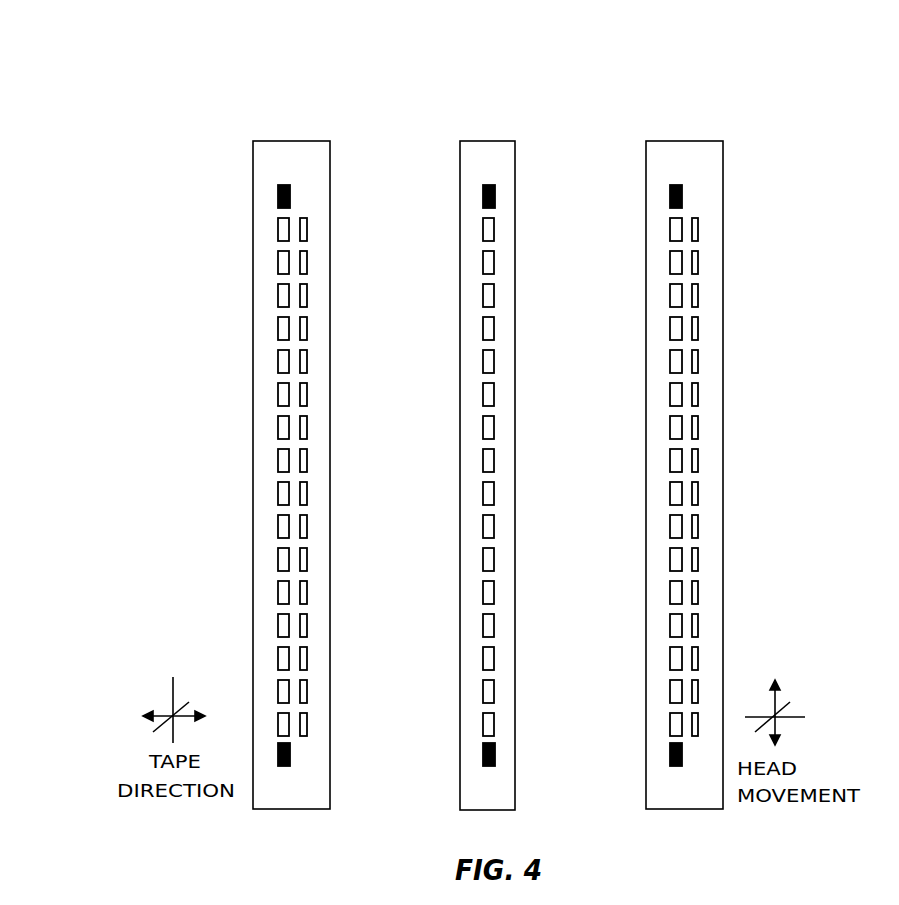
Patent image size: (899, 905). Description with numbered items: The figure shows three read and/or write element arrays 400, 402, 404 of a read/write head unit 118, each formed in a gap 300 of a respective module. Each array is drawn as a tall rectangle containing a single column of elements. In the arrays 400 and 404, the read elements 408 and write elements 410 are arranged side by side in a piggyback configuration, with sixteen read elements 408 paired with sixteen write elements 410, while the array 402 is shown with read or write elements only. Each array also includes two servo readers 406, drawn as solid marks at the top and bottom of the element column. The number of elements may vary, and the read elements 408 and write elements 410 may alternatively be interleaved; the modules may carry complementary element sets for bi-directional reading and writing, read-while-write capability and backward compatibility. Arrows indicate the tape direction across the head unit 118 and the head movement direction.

The read/write head unit 118 is at (178, 413).
The gaps 300 is at (446, 426).
The read and/or write element array 400 is at (298, 119).
The read and/or write element array 402 is at (491, 119).
The read and/or write element array 404 is at (692, 119).
The servo readers 406 is at (278, 191).
The read elements 408 is at (278, 229).
The write elements 410 is at (307, 226).